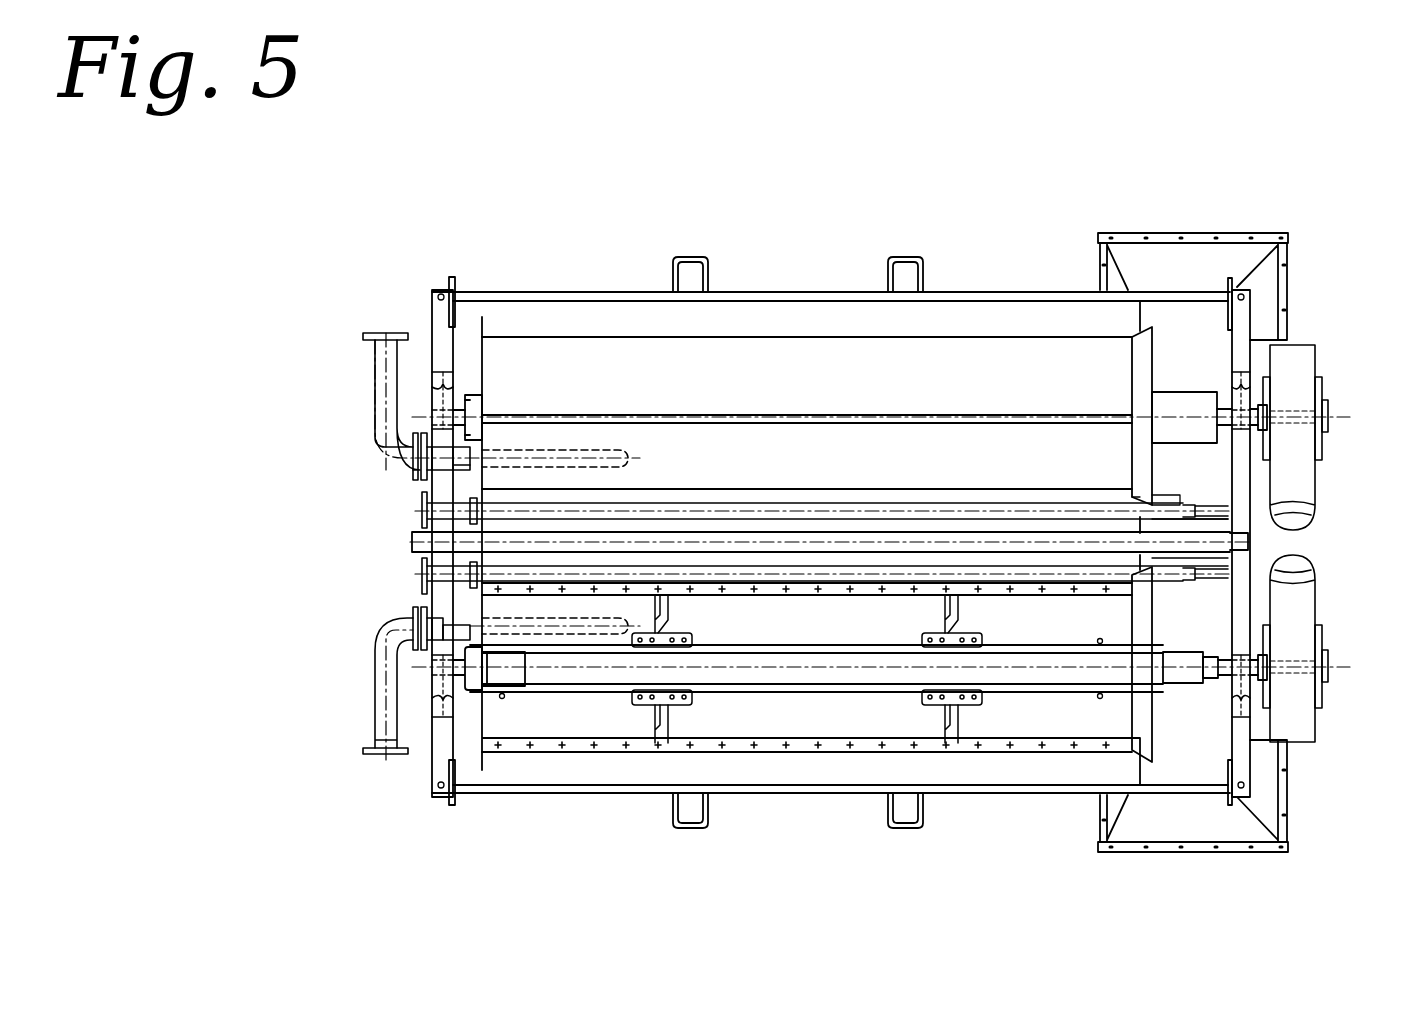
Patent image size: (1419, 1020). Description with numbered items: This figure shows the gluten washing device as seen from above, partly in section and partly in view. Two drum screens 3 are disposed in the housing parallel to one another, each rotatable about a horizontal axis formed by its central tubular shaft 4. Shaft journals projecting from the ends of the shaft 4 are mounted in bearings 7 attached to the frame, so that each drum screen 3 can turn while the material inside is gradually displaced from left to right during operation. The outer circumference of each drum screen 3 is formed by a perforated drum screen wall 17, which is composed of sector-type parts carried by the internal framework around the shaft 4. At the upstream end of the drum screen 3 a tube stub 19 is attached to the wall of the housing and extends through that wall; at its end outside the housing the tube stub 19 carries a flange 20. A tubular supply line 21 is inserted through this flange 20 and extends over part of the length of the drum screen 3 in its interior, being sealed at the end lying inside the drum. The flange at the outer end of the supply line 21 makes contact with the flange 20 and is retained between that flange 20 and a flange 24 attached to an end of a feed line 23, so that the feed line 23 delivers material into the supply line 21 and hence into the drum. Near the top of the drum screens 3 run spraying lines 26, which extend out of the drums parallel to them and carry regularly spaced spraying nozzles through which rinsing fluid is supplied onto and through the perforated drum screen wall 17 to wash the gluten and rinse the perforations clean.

The drum screen 3 is at (850, 335).
The central tubular shaft 4 is at (1175, 392).
The bearing 7 is at (440, 400).
The drum screen wall 17 is at (624, 360).
The tube stub 19 is at (450, 465).
The flange 20 is at (430, 440).
The tubular supply line 21 is at (550, 458).
The feed line 23 is at (378, 400).
The flange 24 is at (452, 447).
The spraying line 26 is at (440, 511).